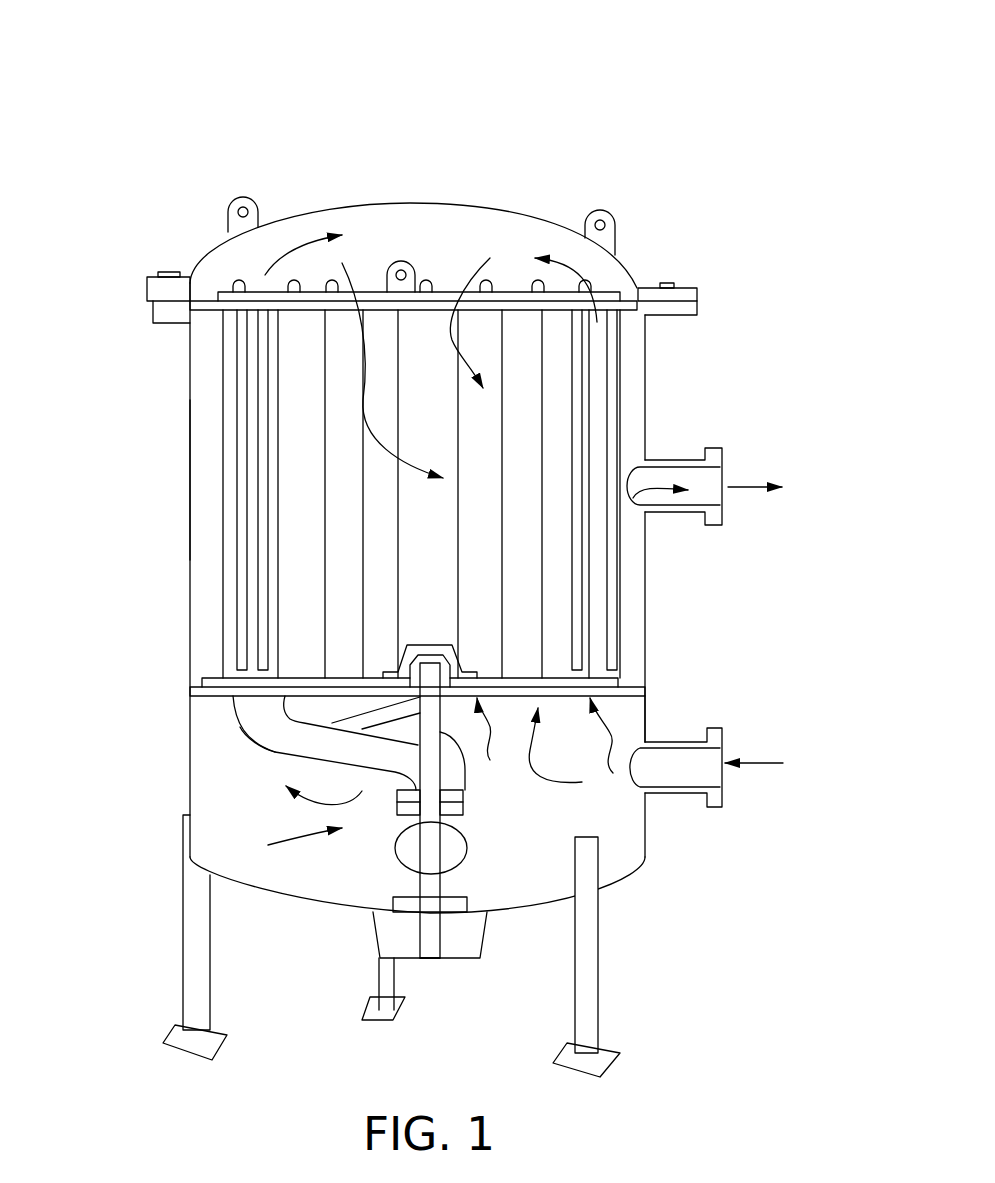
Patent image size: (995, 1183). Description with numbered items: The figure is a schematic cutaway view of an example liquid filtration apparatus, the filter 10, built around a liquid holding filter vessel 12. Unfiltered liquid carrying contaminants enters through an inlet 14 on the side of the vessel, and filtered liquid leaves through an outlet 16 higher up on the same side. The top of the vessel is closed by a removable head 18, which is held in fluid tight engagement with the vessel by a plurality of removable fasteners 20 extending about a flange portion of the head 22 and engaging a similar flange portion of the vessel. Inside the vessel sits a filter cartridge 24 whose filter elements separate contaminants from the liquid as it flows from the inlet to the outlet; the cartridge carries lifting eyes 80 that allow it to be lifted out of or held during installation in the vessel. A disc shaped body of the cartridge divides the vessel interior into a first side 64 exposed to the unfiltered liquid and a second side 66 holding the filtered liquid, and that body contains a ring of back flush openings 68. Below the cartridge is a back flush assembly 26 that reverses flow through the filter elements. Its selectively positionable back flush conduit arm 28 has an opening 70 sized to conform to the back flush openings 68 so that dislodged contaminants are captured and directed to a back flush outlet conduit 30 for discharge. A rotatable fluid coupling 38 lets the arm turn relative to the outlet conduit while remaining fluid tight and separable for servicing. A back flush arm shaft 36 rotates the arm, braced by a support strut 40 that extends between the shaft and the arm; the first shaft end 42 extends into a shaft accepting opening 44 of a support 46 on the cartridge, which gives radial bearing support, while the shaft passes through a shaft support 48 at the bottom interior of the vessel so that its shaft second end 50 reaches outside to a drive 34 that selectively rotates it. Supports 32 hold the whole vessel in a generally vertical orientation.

The filter 10 is at (96, 138).
The filter vessel 12 is at (645, 633).
The inlet 14 is at (723, 730).
The outlet 16 is at (723, 453).
The removable head 18 is at (517, 212).
The removable fasteners 20 is at (673, 283).
The flange portion of the head 22 is at (700, 297).
The filter cartridge 24 is at (208, 478).
The back flush assembly 26 is at (303, 821).
The back flush conduit arm 28 is at (267, 700).
The back flush outlet conduit 30 is at (463, 830).
The supports 32 is at (600, 965).
The drive 34 is at (483, 935).
The back flush arm shaft 36 is at (541, 747).
The rotatable fluid coupling 38 is at (463, 802).
The support strut 40 is at (367, 710).
The first shaft end 42 is at (437, 668).
The shaft accepting opening 44 is at (450, 658).
The support 46 is at (402, 663).
The shaft support 48 is at (463, 897).
The shaft second end 50 is at (435, 958).
The first side 64 is at (623, 725).
The second side 66 is at (628, 670).
The back flush openings 68 is at (243, 675).
The opening 70 is at (252, 740).
The cartridge lifting eyes 80 is at (402, 260).